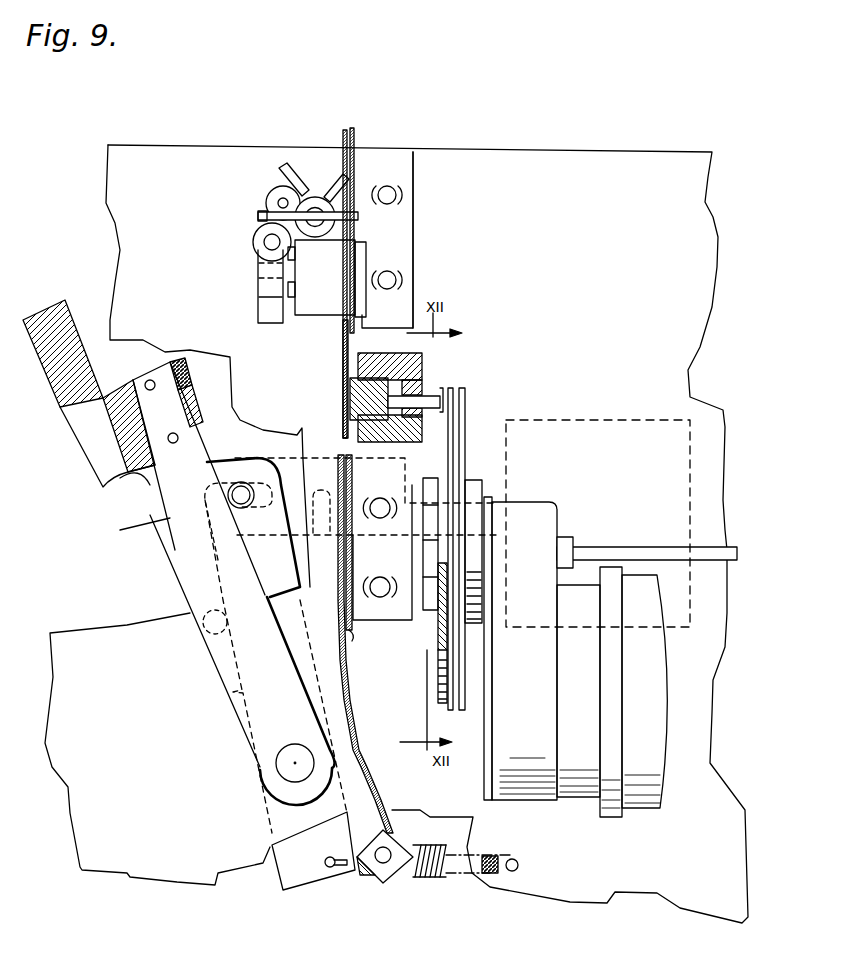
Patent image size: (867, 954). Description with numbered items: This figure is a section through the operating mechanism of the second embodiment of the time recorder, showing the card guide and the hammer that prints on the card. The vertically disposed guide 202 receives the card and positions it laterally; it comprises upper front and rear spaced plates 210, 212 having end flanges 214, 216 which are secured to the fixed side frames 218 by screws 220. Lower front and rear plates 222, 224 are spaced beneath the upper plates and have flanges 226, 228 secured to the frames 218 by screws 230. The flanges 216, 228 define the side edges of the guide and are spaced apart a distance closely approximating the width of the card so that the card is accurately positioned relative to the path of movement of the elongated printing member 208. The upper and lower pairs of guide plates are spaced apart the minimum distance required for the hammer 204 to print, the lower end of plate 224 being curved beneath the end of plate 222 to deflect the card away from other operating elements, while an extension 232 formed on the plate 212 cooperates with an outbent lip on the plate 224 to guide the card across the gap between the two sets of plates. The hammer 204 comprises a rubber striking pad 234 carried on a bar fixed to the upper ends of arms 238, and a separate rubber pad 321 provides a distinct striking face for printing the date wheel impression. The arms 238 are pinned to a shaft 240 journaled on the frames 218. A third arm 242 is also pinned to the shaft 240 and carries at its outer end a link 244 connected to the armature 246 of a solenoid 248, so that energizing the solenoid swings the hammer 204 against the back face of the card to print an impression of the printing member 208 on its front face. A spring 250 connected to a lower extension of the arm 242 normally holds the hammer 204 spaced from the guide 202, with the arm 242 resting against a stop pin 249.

The guide 202 is at (364, 106).
The hammer 204 is at (175, 322).
The elongated printing member 208 is at (412, 378).
The upper front plate 210 is at (355, 147).
The upper rear plate 212 is at (343, 148).
The end flange 214 is at (410, 151).
The end flange 216 is at (413, 163).
The side frames 218 is at (553, 151).
The screws 220 is at (396, 280).
The lower front plate 222 is at (352, 641).
The lower rear plate 224 is at (340, 540).
The flange 226 is at (380, 597).
The flange 228 is at (412, 618).
The screws 230 is at (380, 518).
The extension 232 is at (337, 405).
The rubber striking pad 234 is at (203, 397).
The arms 238 is at (150, 520).
The shaft 240 is at (276, 768).
The third arm 242 is at (230, 700).
The link 244 is at (300, 426).
The armature 246 is at (500, 503).
The solenoid 248 is at (655, 420).
The stop pin 249 is at (203, 628).
The spring 250 is at (427, 876).
The rubber pad 321 is at (183, 362).